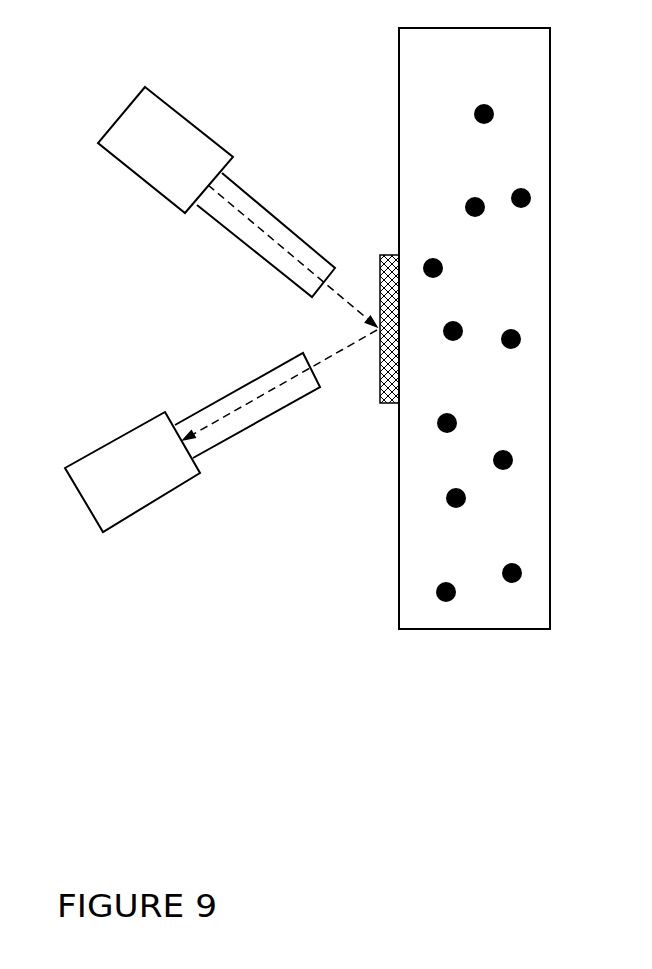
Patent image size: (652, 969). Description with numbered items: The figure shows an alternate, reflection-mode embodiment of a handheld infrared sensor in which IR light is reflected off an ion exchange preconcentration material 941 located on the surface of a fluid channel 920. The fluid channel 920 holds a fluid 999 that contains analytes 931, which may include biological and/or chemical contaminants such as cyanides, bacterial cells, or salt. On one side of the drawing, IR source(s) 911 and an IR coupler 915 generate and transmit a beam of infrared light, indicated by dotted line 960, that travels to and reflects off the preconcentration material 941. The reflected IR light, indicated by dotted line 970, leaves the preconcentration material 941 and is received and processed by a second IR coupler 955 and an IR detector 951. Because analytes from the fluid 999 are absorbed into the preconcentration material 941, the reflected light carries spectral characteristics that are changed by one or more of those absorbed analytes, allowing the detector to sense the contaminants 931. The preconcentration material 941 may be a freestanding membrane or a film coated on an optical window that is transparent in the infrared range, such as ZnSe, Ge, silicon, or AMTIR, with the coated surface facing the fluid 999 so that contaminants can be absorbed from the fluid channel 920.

The IR source(s) 911 is at (175, 109).
The IR coupler 915 is at (237, 237).
The beam of infrared (IR) light 960 is at (337, 295).
The ion exchange preconcentration material 941 is at (382, 254).
The fluid channel 920 is at (550, 367).
The fluid 999 is at (443, 66).
The analytes 931 is at (530, 193).
The IR detector 951 is at (143, 423).
The IR coupler 955 is at (255, 423).
The reflected IR light 970 is at (330, 360).